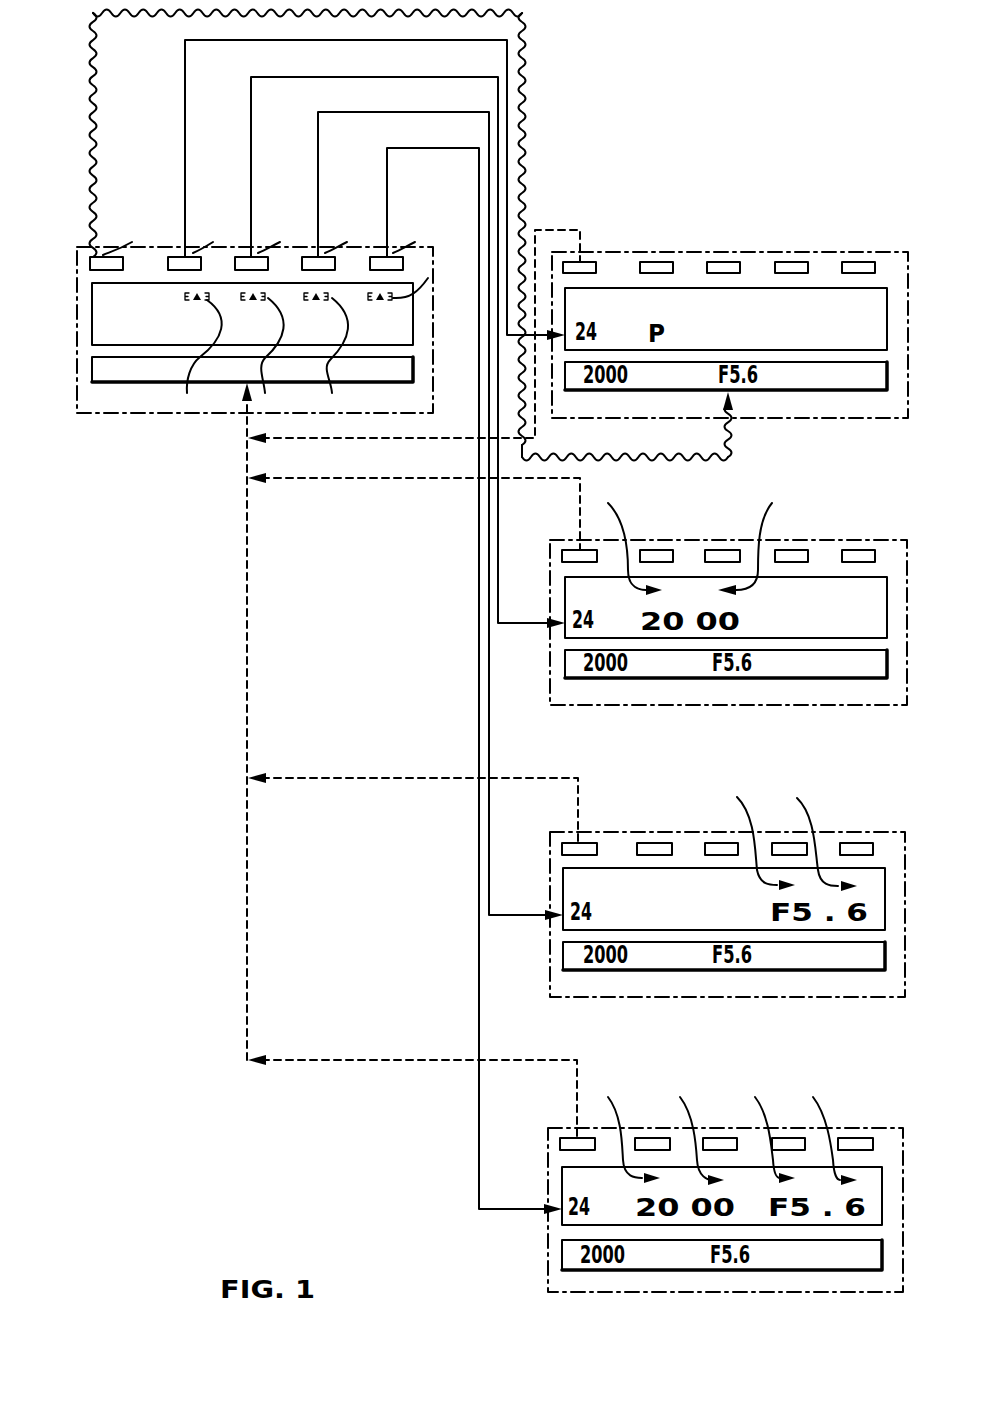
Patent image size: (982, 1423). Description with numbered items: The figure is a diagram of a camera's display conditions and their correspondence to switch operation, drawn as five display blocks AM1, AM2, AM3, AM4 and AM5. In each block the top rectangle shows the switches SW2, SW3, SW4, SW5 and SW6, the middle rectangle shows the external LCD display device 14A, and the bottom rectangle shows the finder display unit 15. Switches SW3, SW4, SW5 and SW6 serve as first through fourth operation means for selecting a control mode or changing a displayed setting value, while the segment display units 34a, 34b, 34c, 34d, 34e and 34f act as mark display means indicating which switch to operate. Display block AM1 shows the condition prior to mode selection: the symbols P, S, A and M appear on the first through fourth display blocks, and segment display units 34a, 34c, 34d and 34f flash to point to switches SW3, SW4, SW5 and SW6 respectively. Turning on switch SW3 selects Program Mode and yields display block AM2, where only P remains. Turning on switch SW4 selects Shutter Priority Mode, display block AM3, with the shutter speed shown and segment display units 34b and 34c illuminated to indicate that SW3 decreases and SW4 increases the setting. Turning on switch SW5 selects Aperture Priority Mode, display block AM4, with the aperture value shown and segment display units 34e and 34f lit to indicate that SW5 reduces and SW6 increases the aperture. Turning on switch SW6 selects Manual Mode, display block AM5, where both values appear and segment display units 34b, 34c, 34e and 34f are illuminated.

The display block AM1 is at (77, 270).
The display block AM2 is at (812, 420).
The display block AM3 is at (800, 708).
The display block AM4 is at (800, 1000).
The display block AM5 is at (800, 1295).
The switch SW2 is at (116, 240).
The switch SW3 is at (648, 1138).
The switch SW4 is at (712, 1138).
The switch SW5 is at (794, 1138).
The switch SW6 is at (854, 1138).
The external LCD display device 14A is at (413, 320).
The finder display unit 15 is at (413, 375).
The segment display unit 34a is at (206, 358).
The segment display unit 34b is at (623, 830).
The segment display unit 34c is at (532, 741).
The segment display unit 34d is at (352, 357).
The segment display unit 34e is at (755, 975).
The segment display unit 34f is at (625, 729).